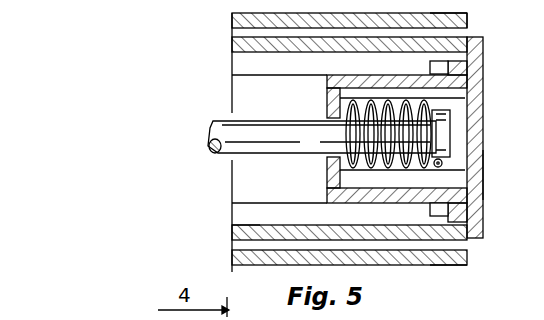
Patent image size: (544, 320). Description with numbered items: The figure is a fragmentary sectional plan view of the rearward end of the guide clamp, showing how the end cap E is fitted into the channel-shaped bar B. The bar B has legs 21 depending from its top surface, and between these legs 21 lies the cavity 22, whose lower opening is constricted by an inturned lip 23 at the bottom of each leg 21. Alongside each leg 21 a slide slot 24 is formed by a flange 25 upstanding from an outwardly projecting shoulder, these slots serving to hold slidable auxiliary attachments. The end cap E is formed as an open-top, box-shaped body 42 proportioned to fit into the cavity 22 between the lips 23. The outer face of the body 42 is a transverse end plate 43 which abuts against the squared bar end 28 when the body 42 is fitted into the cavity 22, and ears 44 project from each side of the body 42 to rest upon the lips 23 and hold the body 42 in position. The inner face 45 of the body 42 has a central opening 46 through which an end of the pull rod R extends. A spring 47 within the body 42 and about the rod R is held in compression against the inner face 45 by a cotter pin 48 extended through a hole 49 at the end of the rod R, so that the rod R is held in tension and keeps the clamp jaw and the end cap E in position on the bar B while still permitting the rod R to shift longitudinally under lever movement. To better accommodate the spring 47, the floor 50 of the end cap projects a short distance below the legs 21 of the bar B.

The legs 21 is at (240, 45).
The cavity 22 is at (250, 93).
The inturned lip 23 is at (253, 62).
The slide slot 24 is at (240, 30).
The flange 25 is at (440, 13).
The squared bar end 28 is at (467, 20).
The body 42 is at (325, 79).
The transverse end plate 43 is at (477, 100).
The ears 44 is at (455, 70).
The inner face 45 is at (328, 103).
The central opening 46 is at (327, 160).
The spring 47 is at (389, 100).
The cotter pin 48 is at (442, 162).
The hole 49 is at (450, 128).
The floor 50 is at (393, 170).
The pull rod R is at (236, 126).
The bar B is at (226, 220).
The end cap E is at (472, 177).